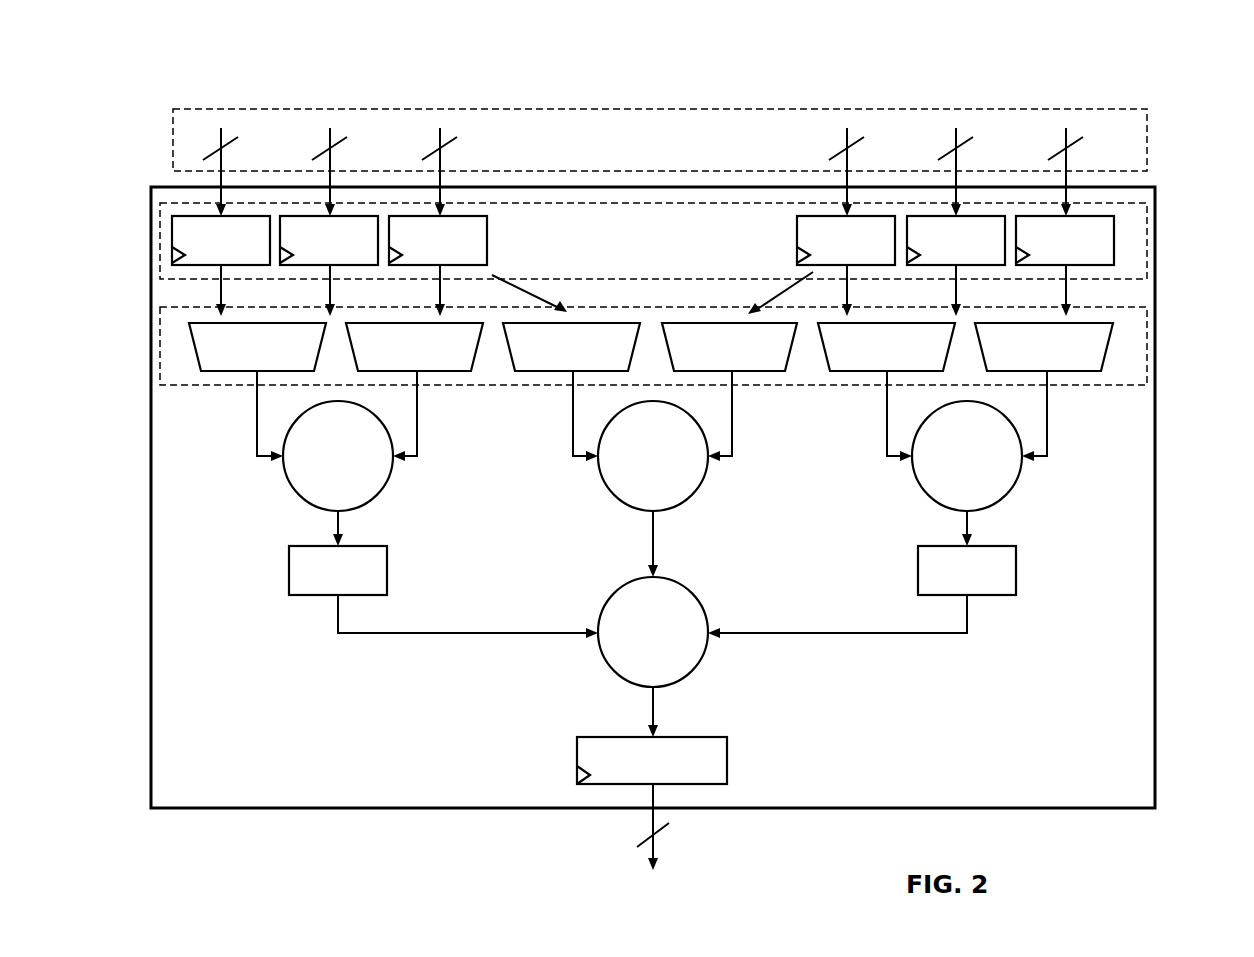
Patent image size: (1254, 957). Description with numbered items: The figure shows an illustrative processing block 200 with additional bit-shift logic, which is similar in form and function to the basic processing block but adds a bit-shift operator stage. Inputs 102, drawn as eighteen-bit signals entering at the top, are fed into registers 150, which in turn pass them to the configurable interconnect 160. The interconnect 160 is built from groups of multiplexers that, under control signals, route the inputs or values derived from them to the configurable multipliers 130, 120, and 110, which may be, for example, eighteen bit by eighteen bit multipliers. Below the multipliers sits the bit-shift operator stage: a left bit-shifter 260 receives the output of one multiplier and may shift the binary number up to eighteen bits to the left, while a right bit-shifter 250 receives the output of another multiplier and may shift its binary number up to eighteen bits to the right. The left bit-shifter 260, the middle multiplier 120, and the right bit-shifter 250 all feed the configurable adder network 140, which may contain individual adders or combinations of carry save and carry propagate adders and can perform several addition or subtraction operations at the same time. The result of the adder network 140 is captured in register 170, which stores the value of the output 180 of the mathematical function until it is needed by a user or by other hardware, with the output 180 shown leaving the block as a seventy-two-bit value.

The processing block 200 is at (152, 75).
The inputs 102 is at (1147, 140).
The registers 150 is at (1147, 238).
The configurable interconnect 160 is at (1147, 343).
The configurable multiplier 130 is at (378, 492).
The configurable multiplier 120 is at (688, 492).
The configurable multiplier 110 is at (1017, 488).
The left bit-shifter 260 is at (308, 595).
The right bit-shifter 250 is at (993, 595).
The configurable adder network 140 is at (697, 668).
The register 170 is at (727, 760).
The output 180 is at (655, 848).